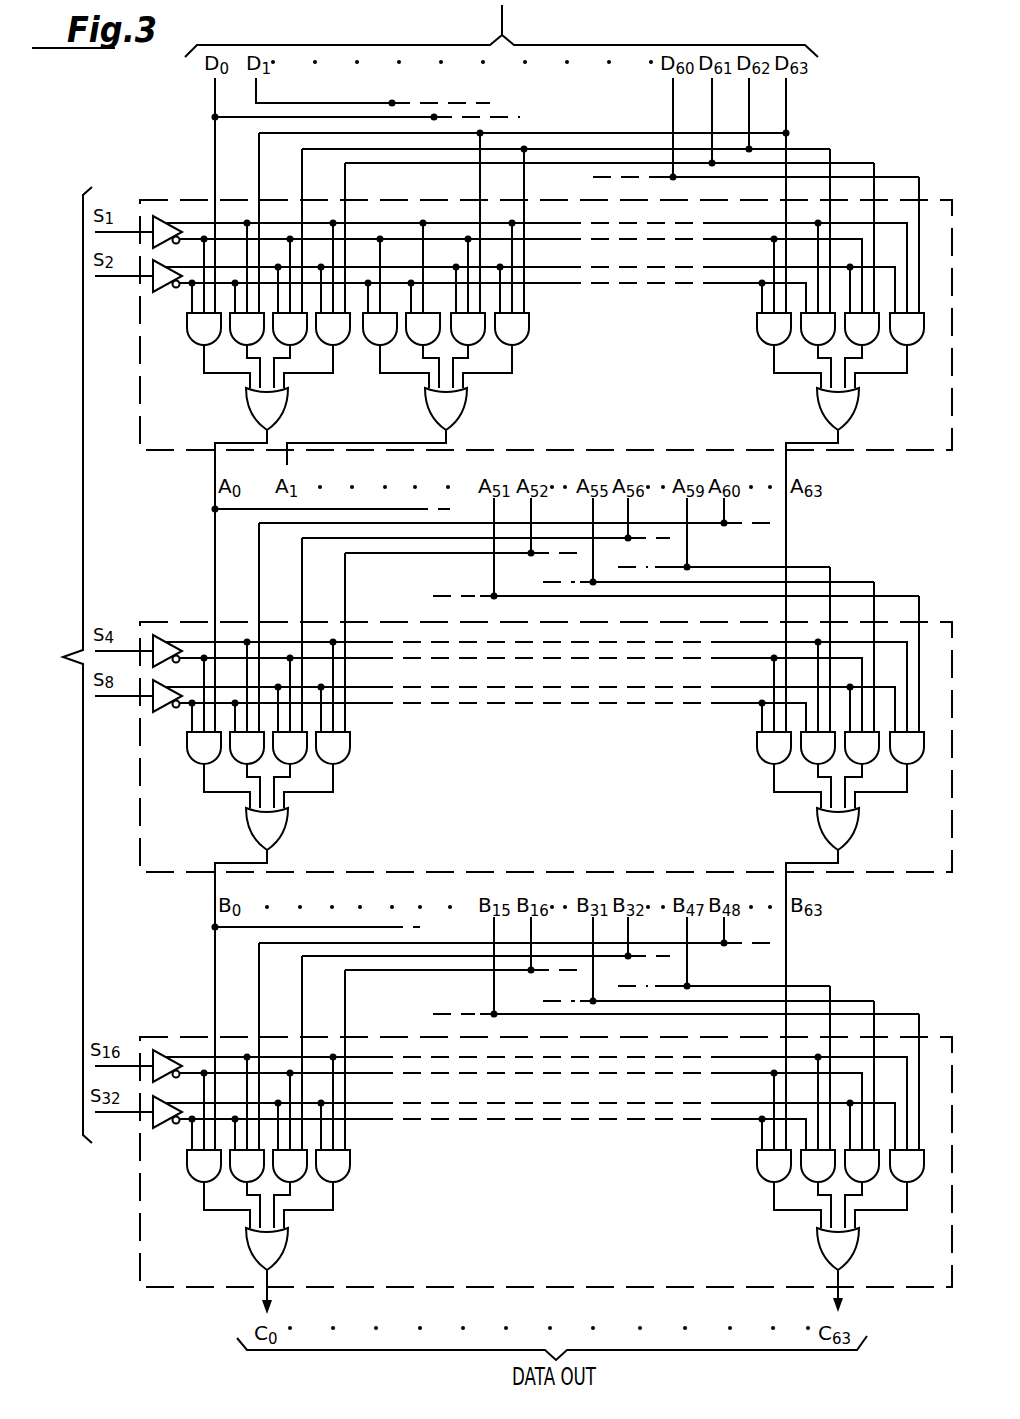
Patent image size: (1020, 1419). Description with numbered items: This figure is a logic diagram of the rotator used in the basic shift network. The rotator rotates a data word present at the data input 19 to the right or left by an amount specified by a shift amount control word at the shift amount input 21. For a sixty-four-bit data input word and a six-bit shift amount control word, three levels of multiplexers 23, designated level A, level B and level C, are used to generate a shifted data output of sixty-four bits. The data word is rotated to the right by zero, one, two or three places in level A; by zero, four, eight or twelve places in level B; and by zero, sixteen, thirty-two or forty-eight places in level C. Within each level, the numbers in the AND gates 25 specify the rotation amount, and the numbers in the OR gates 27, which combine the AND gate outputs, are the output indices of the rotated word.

The data input 19 is at (500, 16).
The shift amount input 21 is at (59, 665).
The multiplexers 23 is at (178, 455).
The AND gates 25 is at (187, 338).
The OR gates 27 is at (246, 405).